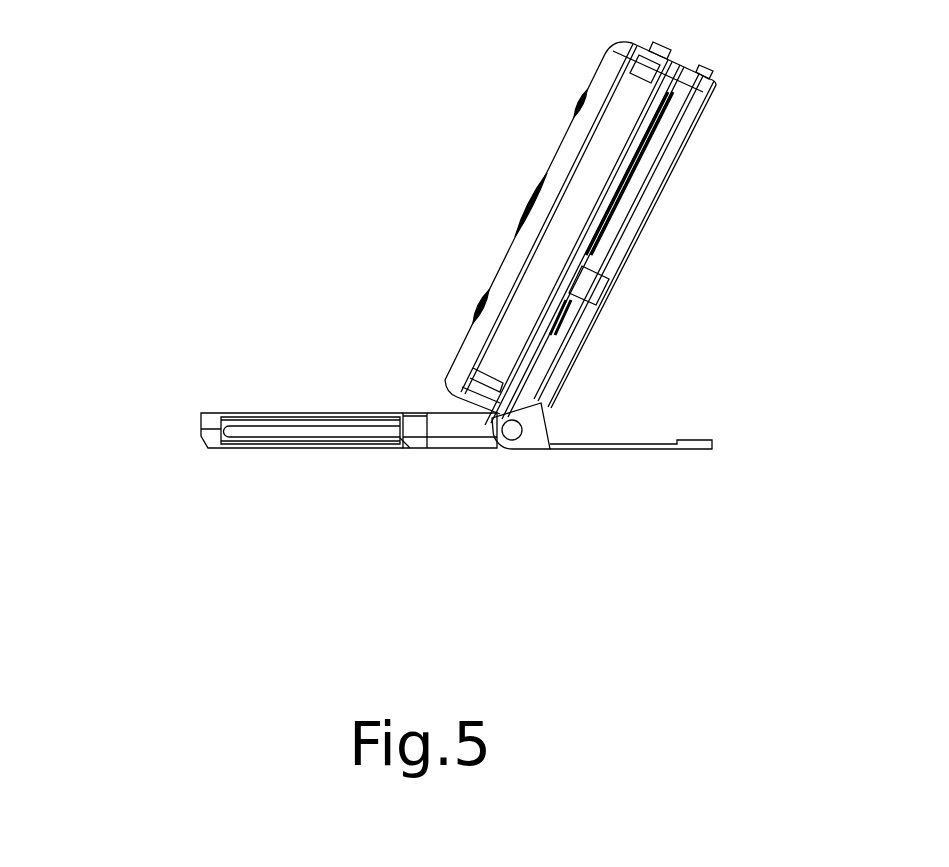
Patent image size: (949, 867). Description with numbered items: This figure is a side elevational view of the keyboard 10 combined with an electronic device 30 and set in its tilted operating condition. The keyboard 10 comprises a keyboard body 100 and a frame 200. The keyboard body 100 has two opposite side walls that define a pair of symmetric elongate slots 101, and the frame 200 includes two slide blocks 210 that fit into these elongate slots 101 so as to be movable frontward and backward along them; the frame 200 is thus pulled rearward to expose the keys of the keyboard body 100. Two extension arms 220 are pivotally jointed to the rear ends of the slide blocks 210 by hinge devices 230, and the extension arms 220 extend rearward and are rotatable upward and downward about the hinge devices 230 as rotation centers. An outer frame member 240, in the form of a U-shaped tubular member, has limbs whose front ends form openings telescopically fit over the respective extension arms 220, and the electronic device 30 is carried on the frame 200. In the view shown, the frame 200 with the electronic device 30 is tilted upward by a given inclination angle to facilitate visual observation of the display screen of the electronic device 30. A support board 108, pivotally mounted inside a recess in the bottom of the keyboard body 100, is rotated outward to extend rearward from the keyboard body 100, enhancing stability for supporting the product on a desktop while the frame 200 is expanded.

The keyboard 10 is at (347, 375).
The electronic device 30 is at (543, 160).
The keyboard body 100 is at (200, 413).
The elongate slots 101 is at (295, 432).
The support board 108 is at (641, 442).
The frame 200 is at (922, 390).
The slide blocks 210 is at (468, 435).
The extension arms 220 is at (570, 348).
The hinge devices 230 is at (515, 424).
The outer frame member 240 is at (645, 228).